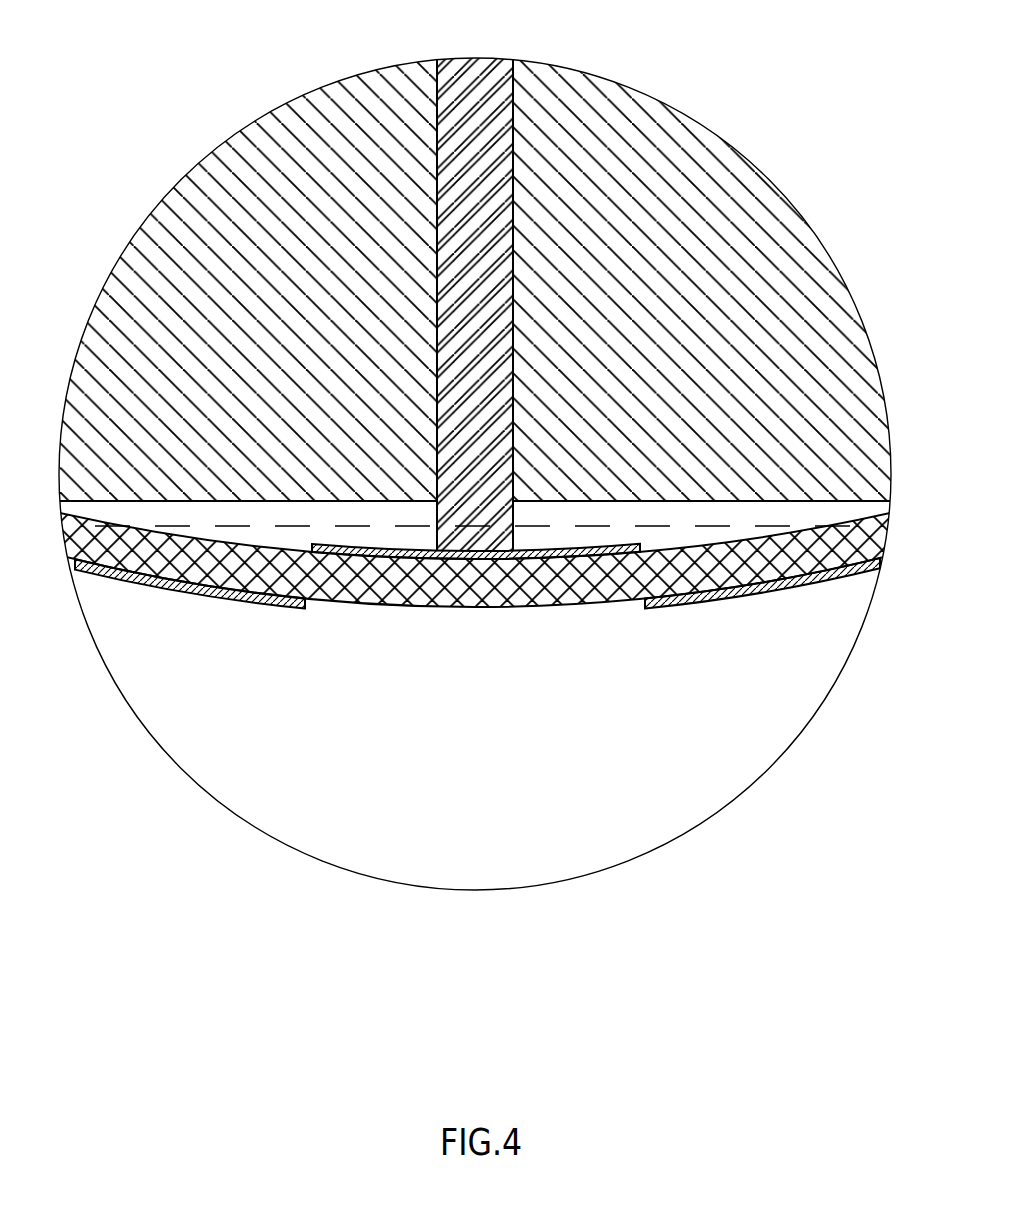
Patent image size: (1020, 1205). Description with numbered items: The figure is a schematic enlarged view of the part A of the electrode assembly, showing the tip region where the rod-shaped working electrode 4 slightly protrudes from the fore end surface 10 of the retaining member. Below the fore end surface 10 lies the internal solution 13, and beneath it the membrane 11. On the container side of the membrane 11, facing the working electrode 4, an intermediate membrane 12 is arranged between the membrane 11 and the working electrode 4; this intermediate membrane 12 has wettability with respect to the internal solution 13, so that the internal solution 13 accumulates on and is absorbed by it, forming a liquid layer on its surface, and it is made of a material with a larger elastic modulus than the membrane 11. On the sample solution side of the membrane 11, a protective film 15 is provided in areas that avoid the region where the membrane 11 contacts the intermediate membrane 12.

The working electrode 4 is at (437, 120).
The fore end surface 10 is at (823, 496).
The membrane 11 is at (618, 605).
The intermediate membrane 12 is at (415, 562).
The internal solution 13 is at (170, 517).
The protective film 15 is at (187, 590).
The part A is at (740, 795).